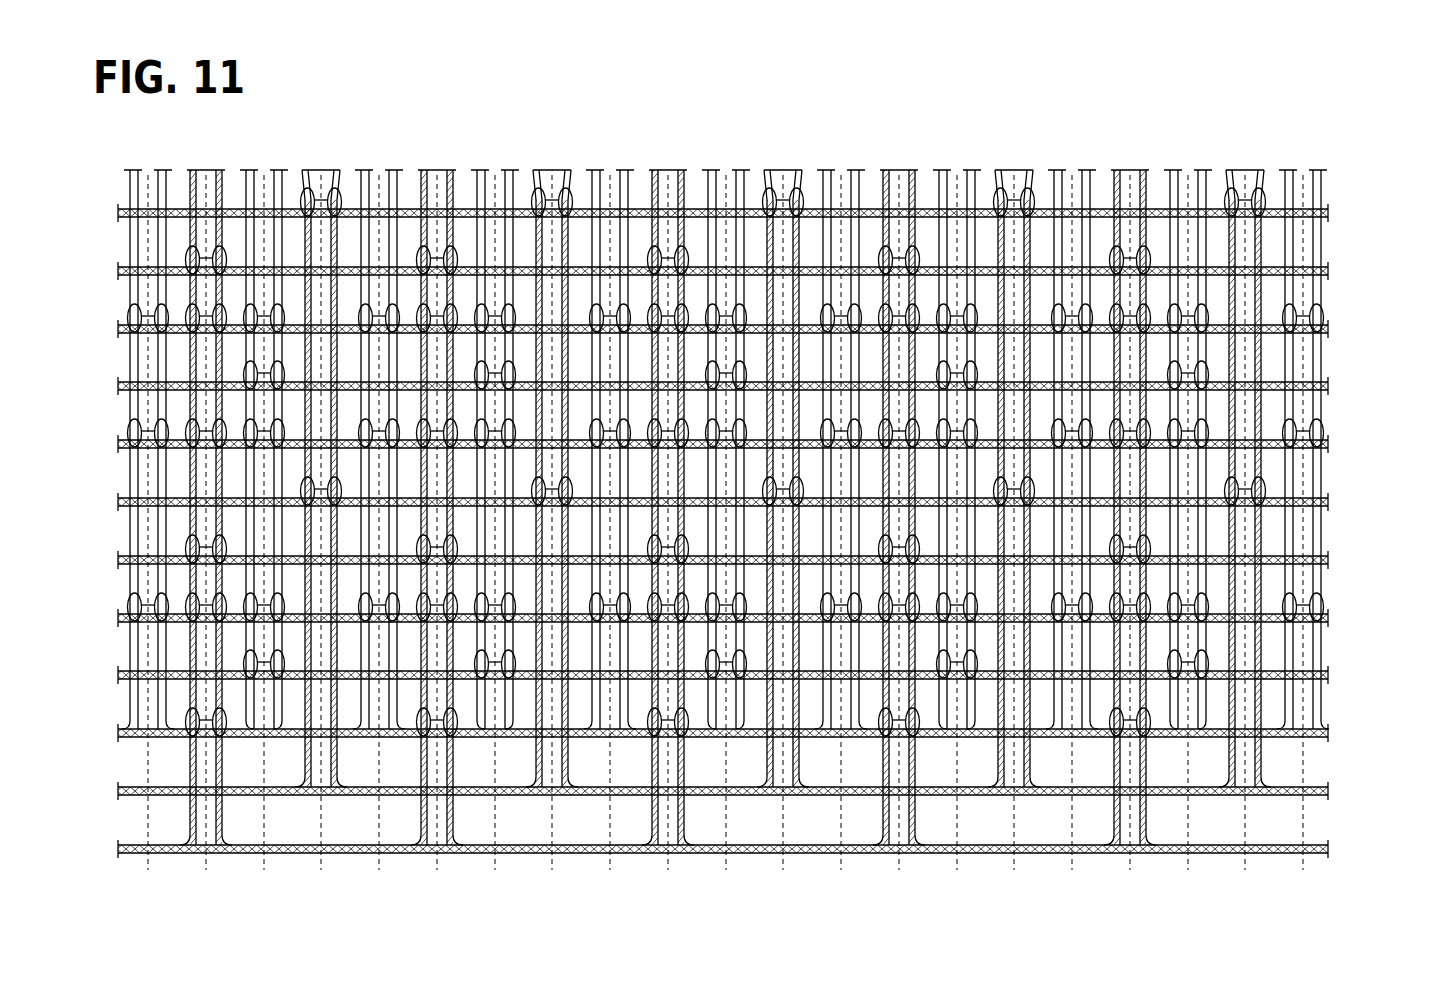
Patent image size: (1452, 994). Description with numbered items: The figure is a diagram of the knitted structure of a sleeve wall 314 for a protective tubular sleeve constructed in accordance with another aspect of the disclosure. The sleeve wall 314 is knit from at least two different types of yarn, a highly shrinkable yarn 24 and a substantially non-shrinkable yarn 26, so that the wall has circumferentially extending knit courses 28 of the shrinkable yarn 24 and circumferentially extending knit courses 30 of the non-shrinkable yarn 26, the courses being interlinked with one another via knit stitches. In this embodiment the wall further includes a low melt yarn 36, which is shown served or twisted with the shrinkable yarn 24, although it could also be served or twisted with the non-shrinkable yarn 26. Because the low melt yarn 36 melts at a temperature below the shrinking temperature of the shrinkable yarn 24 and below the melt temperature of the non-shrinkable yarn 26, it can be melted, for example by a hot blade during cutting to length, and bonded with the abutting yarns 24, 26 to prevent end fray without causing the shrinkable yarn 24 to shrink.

The shrinkable yarn 24 is at (1373, 193).
The non-shrinkable yarn 26 is at (1373, 313).
The knit courses of the shrinkable yarn 28 is at (771, 531).
The knit courses of the non-shrinkable yarn 30 is at (771, 531).
The low melt yarn 36 is at (296, 205).
The sleeve wall 314 is at (1320, 172).